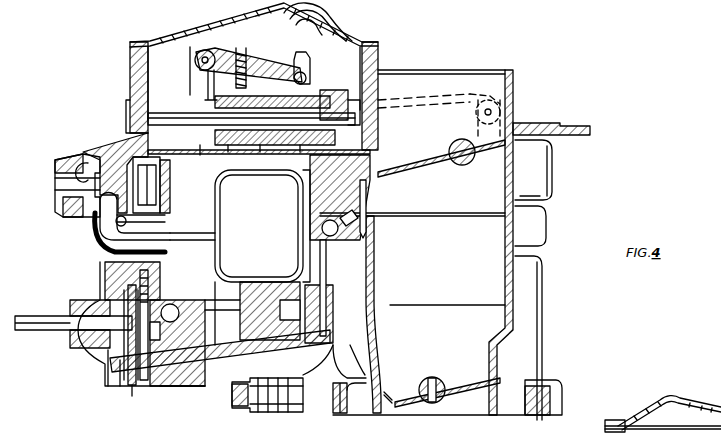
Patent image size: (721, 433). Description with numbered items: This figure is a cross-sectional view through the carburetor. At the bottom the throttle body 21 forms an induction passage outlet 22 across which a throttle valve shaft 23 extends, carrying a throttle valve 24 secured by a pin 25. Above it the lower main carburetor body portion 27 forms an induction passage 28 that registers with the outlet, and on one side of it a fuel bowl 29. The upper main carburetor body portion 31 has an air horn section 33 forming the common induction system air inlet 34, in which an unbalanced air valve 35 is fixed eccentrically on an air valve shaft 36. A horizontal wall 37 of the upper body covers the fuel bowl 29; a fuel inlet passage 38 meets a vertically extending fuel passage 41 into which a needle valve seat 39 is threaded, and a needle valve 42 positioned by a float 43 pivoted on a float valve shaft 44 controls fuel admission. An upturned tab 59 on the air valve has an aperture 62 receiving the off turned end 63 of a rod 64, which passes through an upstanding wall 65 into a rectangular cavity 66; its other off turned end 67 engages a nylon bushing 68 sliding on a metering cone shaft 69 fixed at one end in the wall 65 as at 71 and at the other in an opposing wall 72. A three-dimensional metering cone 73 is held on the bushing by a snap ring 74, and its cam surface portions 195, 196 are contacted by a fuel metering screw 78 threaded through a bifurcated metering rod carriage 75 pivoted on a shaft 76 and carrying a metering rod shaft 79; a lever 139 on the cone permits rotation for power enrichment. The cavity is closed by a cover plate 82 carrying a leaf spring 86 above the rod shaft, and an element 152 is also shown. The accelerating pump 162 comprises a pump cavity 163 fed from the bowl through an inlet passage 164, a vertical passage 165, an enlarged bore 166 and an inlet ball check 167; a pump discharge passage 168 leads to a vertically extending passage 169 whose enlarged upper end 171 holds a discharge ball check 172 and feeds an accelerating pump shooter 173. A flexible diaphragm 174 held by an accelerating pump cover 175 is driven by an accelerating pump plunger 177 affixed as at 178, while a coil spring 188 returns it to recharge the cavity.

The throttle body 21 is at (534, 398).
The induction passage outlet 22 is at (490, 396).
The throttle valve shaft 23 is at (440, 382).
The throttle valve 24 is at (410, 384).
The pin 25 is at (432, 376).
The lower main carburetor body portion 27 is at (498, 318).
The induction passage 28 is at (505, 242).
The fuel bowl 29 is at (108, 262).
The upper main carburetor body portion 31 is at (545, 156).
The air horn section 33 is at (513, 86).
The common induction system air inlet 34 is at (378, 80).
The unbalanced air valve 35 is at (404, 165).
The air valve shaft 36 is at (450, 148).
The horizontal wall 37 is at (150, 138).
The fuel inlet passage 38 is at (55, 182).
The needle valve seat 39 is at (86, 173).
The vertically extending fuel passage 41 is at (171, 182).
The needle valve 42 is at (162, 196).
The float 43 is at (245, 210).
The float valve shaft 44 is at (166, 224).
The upturned tab 59 is at (476, 126).
The aperture 62 is at (487, 102).
The off turned end 63 is at (475, 92).
The rod 64 is at (424, 94).
The upstanding wall 65 is at (378, 62).
The rectangular cavity 66 is at (135, 60).
The off turned end 67 is at (330, 90).
The nylon bushing 68 is at (326, 138).
The metering cone shaft 69 is at (178, 112).
The fixing point of metering cone shaft 71 is at (350, 100).
The opposing wall 72 is at (126, 104).
The three-dimensional metering cone 73 is at (294, 78).
The snap ring 74 is at (206, 96).
The bifurcated metering rod carriage 75 is at (226, 46).
The shaft 76 is at (188, 62).
The fuel metering screw 78 is at (258, 46).
The metering rod shaft 79 is at (296, 54).
The cover plate 82 is at (205, 27).
The leaf spring 86 is at (338, 24).
The lever 139 is at (208, 147).
The cover 152 is at (706, 425).
The accelerating pump 162 is at (108, 384).
The pump cavity 163 is at (140, 388).
The inlet passage 164 is at (208, 322).
The vertical passage 165 is at (206, 300).
The enlarged bore 166 is at (173, 241).
The inlet ball check 167 is at (206, 315).
The pump discharge passage 168 is at (232, 386).
The vertically extending passage 169 is at (320, 262).
The enlarged upper end 171 is at (320, 224).
The discharge ball check 172 is at (340, 226).
The accelerating pump shooter 173 is at (368, 222).
The flexible diaphragm 174 is at (122, 360).
The accelerating pump cover 175 is at (112, 278).
The accelerating pump plunger 177 is at (80, 300).
The attachment point of plunger to diaphragm 178 is at (128, 290).
The coil spring 188 is at (182, 396).
The cam surface portion 195 is at (321, 153).
The cam surface portion 196 is at (247, 153).